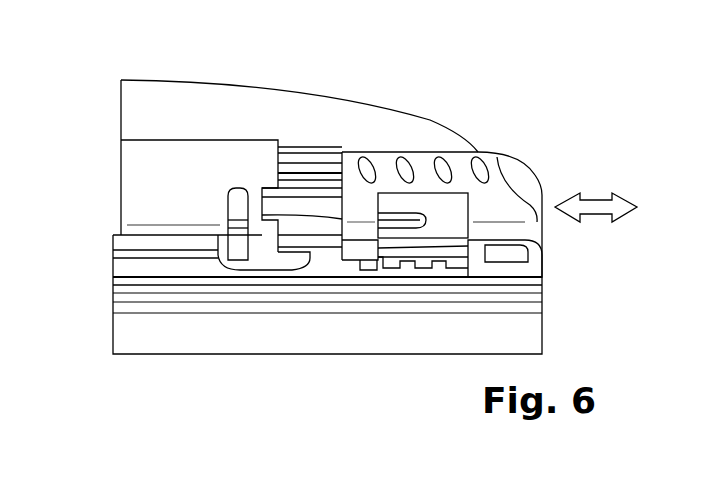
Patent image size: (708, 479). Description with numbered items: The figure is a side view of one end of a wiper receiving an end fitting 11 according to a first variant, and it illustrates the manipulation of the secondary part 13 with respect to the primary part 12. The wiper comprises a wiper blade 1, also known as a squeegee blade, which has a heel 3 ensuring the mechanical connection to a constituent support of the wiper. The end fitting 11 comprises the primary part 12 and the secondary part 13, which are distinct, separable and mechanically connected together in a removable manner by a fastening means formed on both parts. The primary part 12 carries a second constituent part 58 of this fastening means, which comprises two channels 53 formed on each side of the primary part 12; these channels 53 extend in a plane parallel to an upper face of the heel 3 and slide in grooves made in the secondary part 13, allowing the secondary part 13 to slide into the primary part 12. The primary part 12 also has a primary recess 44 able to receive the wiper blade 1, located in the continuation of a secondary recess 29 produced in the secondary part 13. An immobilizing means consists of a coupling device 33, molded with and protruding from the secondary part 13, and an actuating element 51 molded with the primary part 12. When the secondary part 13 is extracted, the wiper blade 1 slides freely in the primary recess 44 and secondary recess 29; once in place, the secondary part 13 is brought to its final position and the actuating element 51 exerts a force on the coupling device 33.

The wiper blade 1 is at (140, 360).
The heel 3 is at (135, 242).
The end fitting 11 is at (400, 58).
The primary part 12 is at (120, 182).
The secondary part 13 is at (530, 165).
The secondary recess 29 is at (543, 265).
The coupling device 33 is at (420, 268).
The primary recess 44 is at (218, 263).
The actuating element 51 is at (292, 270).
The channels 53 is at (313, 178).
The second constituent part of the fastening means 58 is at (290, 158).